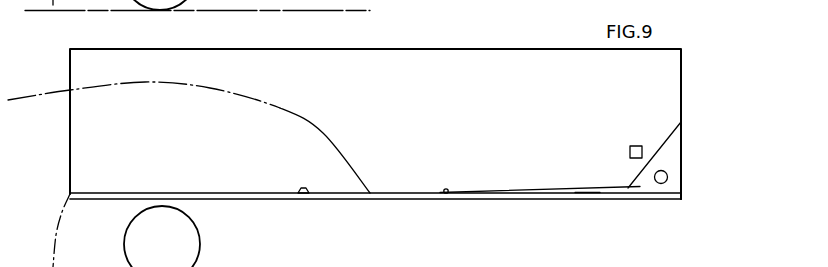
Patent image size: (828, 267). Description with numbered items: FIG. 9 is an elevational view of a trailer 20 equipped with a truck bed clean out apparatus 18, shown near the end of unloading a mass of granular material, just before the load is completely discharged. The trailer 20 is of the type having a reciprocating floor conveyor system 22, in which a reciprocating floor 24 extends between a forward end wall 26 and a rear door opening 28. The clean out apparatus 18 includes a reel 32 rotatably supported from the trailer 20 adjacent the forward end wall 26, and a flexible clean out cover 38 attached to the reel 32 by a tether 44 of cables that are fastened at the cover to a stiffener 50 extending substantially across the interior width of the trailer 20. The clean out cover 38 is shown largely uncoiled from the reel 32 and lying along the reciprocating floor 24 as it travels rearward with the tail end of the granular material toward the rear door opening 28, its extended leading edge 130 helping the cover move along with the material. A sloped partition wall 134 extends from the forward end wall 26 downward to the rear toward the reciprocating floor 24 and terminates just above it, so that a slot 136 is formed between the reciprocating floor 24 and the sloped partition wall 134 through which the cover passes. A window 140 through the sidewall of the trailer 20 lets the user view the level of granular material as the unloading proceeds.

The clean out apparatus 18 is at (581, 123).
The trailer 20 is at (418, 49).
The reciprocating floor conveyor system 22 is at (546, 188).
The reciprocating floor 24 is at (213, 193).
The forward end wall 26 is at (683, 134).
The rear door opening 28 is at (60, 90).
The reel 32 is at (668, 172).
The clean out cover 38 is at (396, 193).
The tether 44 is at (584, 189).
The stiffener 50 is at (449, 188).
The leading edge 130 is at (297, 189).
The sloped partition wall 134 is at (670, 137).
The slot 136 is at (627, 178).
The window 140 is at (632, 145).